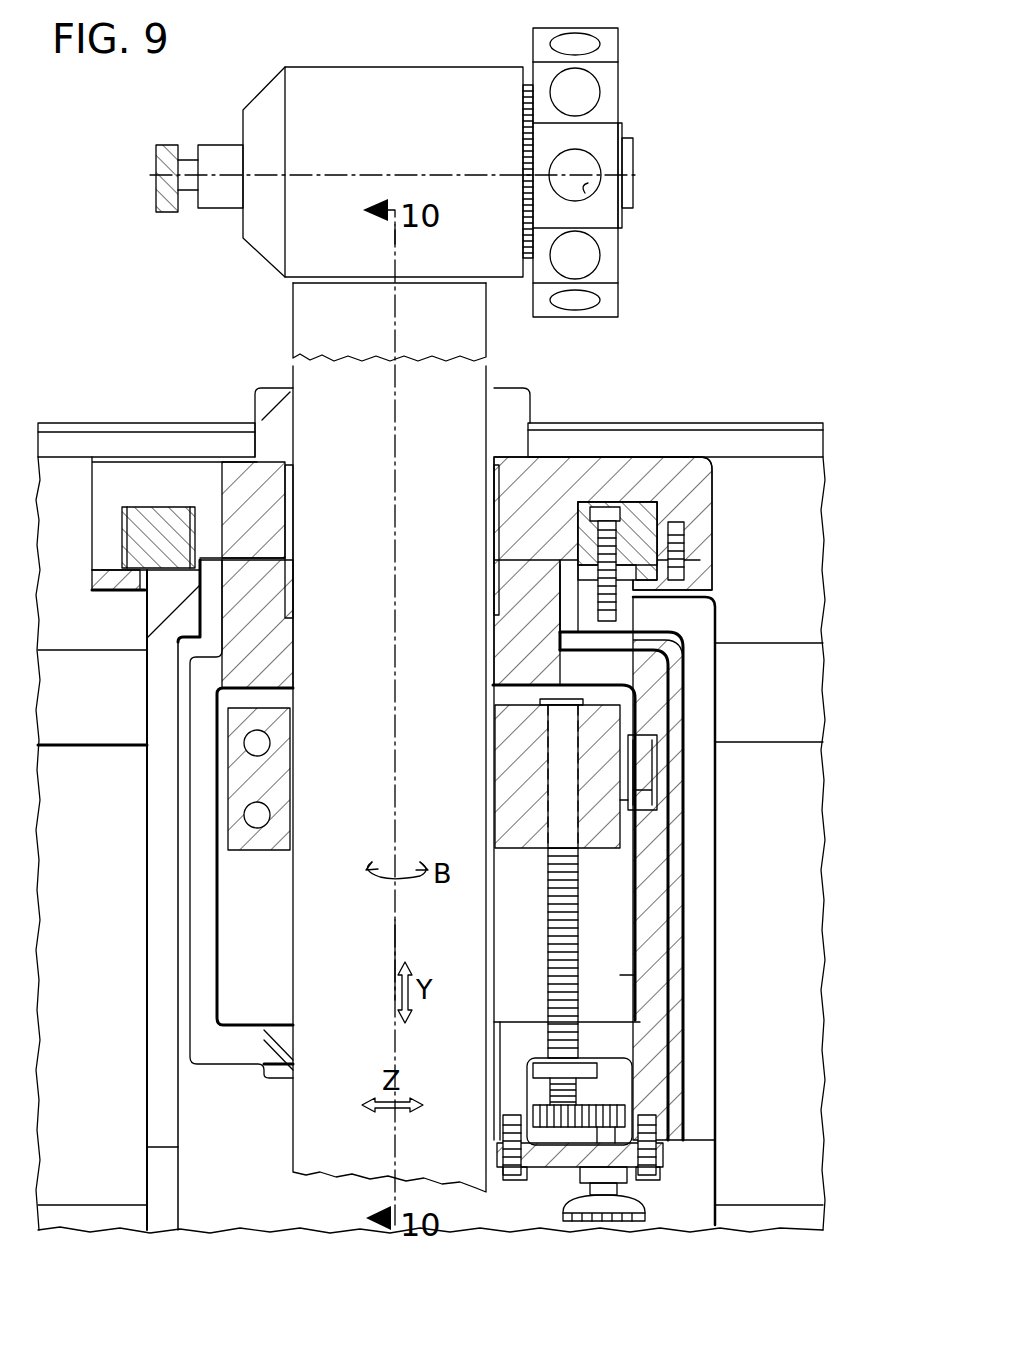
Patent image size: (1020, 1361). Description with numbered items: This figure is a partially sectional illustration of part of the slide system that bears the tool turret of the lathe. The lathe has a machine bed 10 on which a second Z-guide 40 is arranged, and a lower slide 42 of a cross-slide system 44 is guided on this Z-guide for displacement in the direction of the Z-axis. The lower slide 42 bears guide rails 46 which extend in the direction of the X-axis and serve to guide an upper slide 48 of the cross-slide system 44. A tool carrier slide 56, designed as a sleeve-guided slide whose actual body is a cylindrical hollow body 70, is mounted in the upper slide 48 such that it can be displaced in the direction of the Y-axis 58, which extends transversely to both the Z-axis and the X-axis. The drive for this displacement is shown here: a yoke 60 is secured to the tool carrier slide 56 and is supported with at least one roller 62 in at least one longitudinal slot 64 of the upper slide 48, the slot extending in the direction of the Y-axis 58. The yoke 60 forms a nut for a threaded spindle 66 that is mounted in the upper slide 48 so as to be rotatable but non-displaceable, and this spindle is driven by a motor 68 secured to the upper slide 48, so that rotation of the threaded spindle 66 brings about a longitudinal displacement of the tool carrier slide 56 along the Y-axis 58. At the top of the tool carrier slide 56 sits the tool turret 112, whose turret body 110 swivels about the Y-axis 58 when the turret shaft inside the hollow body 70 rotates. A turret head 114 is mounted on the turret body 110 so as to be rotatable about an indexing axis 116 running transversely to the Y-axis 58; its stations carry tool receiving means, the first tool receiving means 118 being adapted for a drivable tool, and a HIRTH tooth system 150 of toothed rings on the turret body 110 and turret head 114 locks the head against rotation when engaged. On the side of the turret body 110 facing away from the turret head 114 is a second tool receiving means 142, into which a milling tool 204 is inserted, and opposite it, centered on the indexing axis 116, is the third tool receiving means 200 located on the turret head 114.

The machine bed 10 is at (787, 472).
The turret body 110 is at (367, 82).
The tool turret 112 is at (642, 55).
The turret head 114 is at (612, 100).
The indexing axis 116 is at (640, 178).
The first tool receiving means 118 is at (590, 200).
The third tool receiving means 200 is at (641, 140).
The milling tool 204 is at (165, 205).
The second tool receiving means 142 is at (194, 208).
The HIRTH tooth system 150 is at (524, 270).
The guide rails 46 is at (150, 545).
The upper slide 48 is at (218, 570).
The cross-slide system 44 is at (738, 603).
The second Z-guide 40 is at (742, 692).
The lower slide 42 is at (722, 778).
The roller 62 is at (648, 807).
The threaded spindle 66 is at (570, 904).
The longitudinal slot 64 is at (650, 980).
The motor 68 is at (650, 1206).
The yoke 60 is at (255, 856).
The tool carrier slide 56 is at (295, 900).
The Y-axis 58 is at (392, 953).
The cylindrical hollow body 70 is at (296, 992).